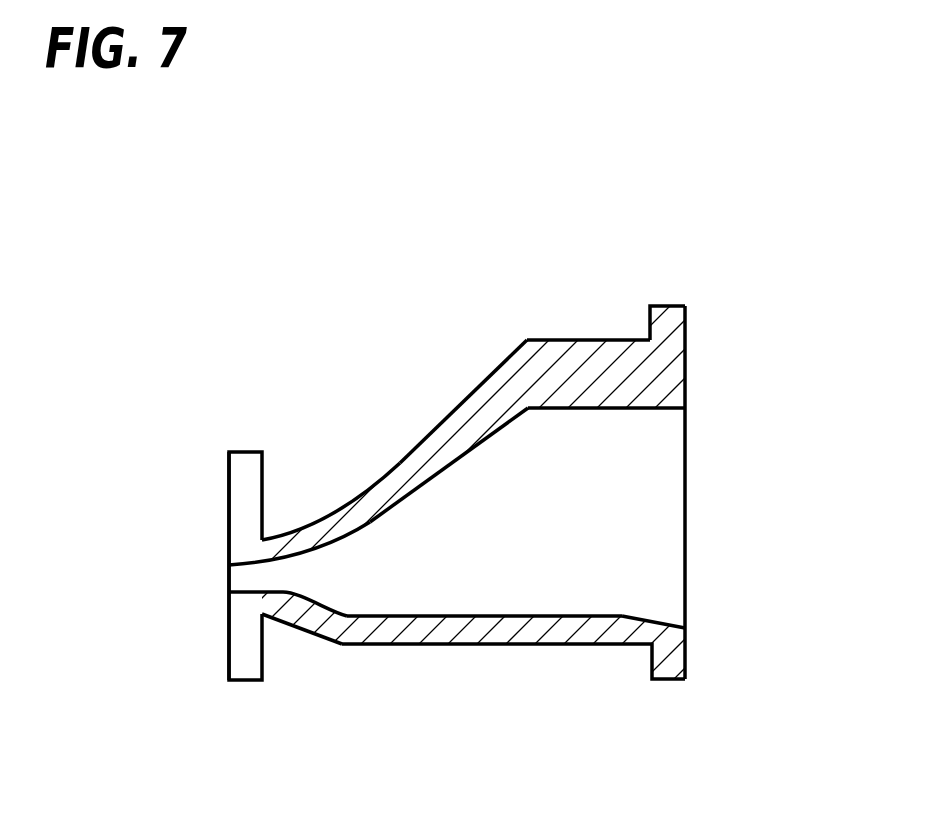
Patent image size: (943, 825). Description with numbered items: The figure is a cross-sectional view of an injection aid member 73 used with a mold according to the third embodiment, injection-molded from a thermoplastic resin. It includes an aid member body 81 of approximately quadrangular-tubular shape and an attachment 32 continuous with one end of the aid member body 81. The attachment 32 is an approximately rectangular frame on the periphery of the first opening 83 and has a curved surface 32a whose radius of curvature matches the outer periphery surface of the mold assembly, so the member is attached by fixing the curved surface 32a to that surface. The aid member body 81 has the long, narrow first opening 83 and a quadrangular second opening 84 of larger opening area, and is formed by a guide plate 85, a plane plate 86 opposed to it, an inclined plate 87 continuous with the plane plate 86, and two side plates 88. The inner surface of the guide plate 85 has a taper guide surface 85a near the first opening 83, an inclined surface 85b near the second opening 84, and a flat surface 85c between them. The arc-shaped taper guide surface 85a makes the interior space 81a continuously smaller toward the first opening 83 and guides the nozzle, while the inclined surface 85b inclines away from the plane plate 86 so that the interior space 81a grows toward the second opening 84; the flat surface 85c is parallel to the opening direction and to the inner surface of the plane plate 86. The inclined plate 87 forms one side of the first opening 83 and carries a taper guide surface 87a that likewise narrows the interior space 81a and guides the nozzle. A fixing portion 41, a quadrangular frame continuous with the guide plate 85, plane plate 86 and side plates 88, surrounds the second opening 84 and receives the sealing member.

The injection aid member 73 is at (710, 165).
The aid member body 81 is at (510, 511).
The interior space 81a is at (650, 567).
The attachment 32 is at (189, 528).
The curved surface 32a is at (228, 493).
The first opening 83 is at (230, 567).
The inclined plate 87 is at (463, 430).
The taper guide surface 87a is at (340, 540).
The plane plate 86 is at (594, 363).
The fixing portion 41 is at (662, 323).
The second opening 84 is at (678, 398).
The side plates 88 is at (595, 476).
The guide plate 85 is at (403, 633).
The taper guide surface 85a is at (303, 600).
The inclined surface 85b is at (656, 628).
The flat surface 85c is at (460, 618).